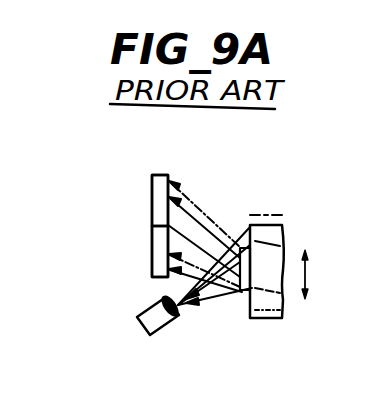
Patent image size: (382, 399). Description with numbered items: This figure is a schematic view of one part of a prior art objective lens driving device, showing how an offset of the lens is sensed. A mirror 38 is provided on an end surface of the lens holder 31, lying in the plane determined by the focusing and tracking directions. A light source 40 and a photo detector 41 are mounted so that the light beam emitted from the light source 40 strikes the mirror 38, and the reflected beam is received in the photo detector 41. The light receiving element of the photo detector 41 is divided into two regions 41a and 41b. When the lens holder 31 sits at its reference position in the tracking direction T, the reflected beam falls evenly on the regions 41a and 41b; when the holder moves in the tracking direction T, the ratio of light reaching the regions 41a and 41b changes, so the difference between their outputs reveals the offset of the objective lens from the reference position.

The lens holder 31 is at (268, 234).
The mirror 38 is at (236, 286).
The light source 40 is at (168, 318).
The photo detector 41 is at (70, 160).
The light receiving region 41a is at (150, 198).
The light receiving region 41b is at (150, 244).
The tracking direction T is at (316, 274).